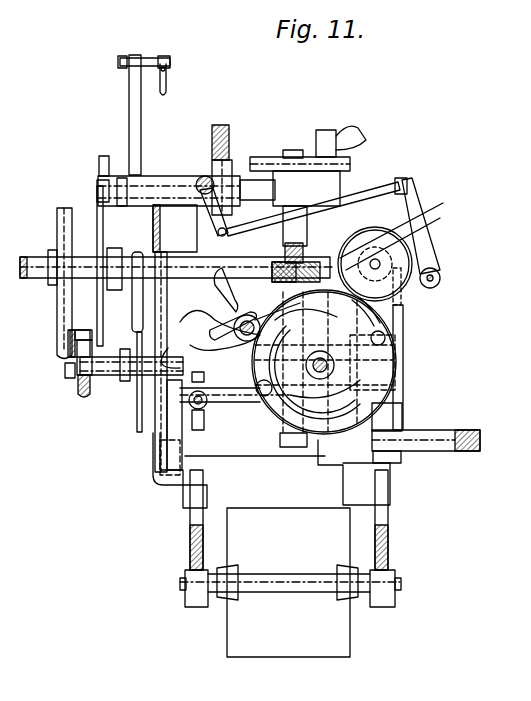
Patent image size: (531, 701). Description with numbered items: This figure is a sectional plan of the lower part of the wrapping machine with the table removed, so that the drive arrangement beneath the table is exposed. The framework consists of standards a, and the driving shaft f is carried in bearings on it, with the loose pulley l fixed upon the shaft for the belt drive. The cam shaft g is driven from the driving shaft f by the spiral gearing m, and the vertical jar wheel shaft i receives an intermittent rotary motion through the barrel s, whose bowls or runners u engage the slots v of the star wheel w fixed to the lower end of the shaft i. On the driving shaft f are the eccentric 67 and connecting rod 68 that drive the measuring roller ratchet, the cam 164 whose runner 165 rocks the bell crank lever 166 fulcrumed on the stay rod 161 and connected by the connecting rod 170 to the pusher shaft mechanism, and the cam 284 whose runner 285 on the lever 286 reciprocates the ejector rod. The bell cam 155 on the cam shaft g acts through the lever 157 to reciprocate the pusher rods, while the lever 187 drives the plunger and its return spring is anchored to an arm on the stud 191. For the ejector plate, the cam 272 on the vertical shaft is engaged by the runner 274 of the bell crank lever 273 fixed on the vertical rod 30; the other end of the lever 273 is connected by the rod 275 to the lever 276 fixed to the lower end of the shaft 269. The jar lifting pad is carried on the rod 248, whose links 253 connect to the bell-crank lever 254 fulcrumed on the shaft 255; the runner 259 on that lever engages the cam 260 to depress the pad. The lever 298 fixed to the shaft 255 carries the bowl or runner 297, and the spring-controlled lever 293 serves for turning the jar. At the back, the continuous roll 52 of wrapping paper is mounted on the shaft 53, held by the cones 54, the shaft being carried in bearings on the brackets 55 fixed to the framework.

The driving shaft f is at (32, 278).
The bell crank lever 166 is at (129, 89).
The connecting rod 170 is at (167, 76).
The stay rod 161 is at (97, 190).
The runner 165 is at (104, 156).
The cam 164 is at (103, 228).
The cam 284 is at (58, 210).
The lever 187 is at (224, 125).
The shaft 269 is at (205, 176).
The lever 276 is at (214, 224).
The rod 275 is at (365, 196).
The bell crank lever 273 is at (414, 236).
The vertical rod 30 is at (440, 278).
The bell cam 155 is at (352, 158).
The lever 157 is at (360, 130).
The cam shaft g is at (293, 150).
The spiral gearing m is at (285, 253).
The cam 272 is at (406, 250).
The runner 274 is at (397, 313).
The loose pulley l is at (324, 362).
The barrel s is at (410, 384).
The jar wheel shaft i is at (254, 316).
The slots v is at (258, 302).
The star wheel w is at (210, 334).
The eccentric 67 is at (137, 313).
The connecting rod 68 is at (138, 402).
The runner 285 is at (68, 340).
The stud 191 is at (66, 372).
The lever 286 is at (83, 399).
The rod 248 is at (192, 405).
The links 253 is at (204, 378).
The bell-crank lever 254 is at (260, 392).
The bowls or runners u is at (260, 394).
The lever 298 is at (403, 327).
The bowl or runner 297 is at (380, 362).
The runner 259 is at (390, 415).
The lever 293 is at (466, 452).
The shaft 255 is at (396, 463).
The standards a is at (153, 460).
The cam 260 is at (280, 438).
The brackets 55 is at (190, 545).
The shaft 53 is at (401, 582).
The cones 54 is at (226, 600).
The continuous roll 52 is at (288, 582).